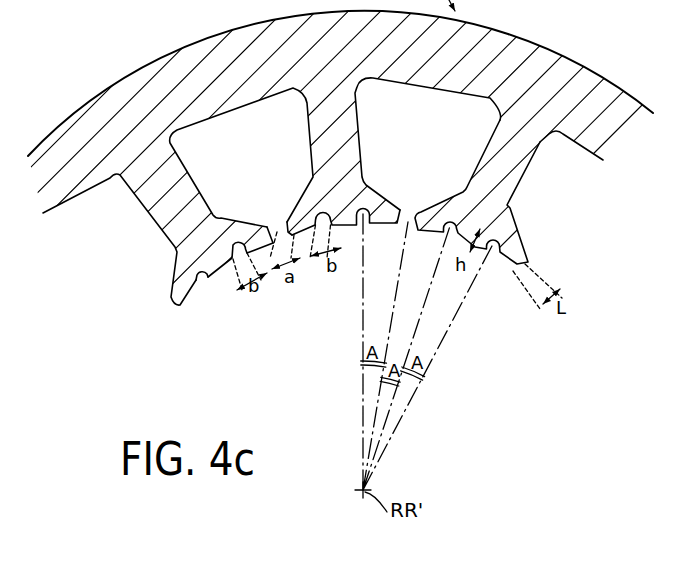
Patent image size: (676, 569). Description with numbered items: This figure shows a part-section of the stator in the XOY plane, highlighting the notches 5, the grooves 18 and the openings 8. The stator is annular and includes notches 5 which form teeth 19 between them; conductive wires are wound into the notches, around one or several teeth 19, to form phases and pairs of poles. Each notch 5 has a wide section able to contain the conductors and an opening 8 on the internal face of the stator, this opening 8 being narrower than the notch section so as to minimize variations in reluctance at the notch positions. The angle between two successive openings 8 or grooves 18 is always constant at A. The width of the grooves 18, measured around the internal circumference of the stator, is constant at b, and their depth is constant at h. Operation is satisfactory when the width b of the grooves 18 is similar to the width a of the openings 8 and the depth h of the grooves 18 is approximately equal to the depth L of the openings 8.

The notch 5 is at (396, 87).
The opening 8 is at (280, 231).
The groove 18 is at (204, 281).
The tooth 19 is at (494, 179).